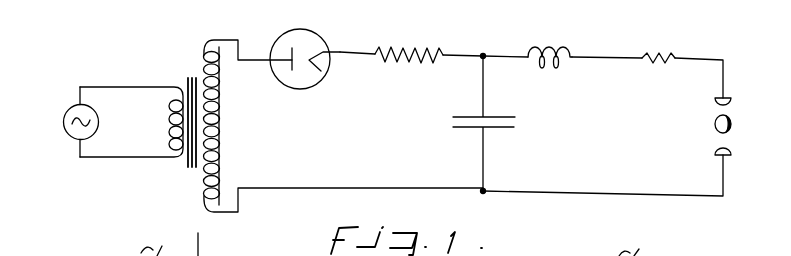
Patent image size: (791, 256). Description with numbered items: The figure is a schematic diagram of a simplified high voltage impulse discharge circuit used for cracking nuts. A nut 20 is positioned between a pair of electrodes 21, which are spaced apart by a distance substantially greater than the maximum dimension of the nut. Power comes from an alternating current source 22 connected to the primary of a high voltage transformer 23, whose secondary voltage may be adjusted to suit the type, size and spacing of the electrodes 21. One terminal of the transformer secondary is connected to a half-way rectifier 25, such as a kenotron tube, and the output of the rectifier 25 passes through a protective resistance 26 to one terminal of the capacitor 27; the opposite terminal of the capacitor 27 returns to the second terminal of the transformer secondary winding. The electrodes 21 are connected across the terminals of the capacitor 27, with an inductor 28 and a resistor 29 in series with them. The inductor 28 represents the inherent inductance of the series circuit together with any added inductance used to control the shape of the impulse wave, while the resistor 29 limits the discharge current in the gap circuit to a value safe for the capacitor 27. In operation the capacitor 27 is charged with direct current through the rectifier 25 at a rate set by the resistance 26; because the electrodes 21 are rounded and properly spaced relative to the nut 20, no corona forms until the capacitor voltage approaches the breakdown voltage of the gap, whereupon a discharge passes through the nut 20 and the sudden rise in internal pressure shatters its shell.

The nut 20 is at (715, 126).
The electrodes 21 is at (730, 104).
The alternating current source 22 is at (63, 110).
The high voltage transformer 23 is at (193, 73).
The half-way rectifier 25 is at (278, 43).
The protective resistance 26 is at (392, 48).
The capacitor 27 is at (455, 122).
The inductor 28 is at (557, 47).
The resistor 29 is at (664, 52).